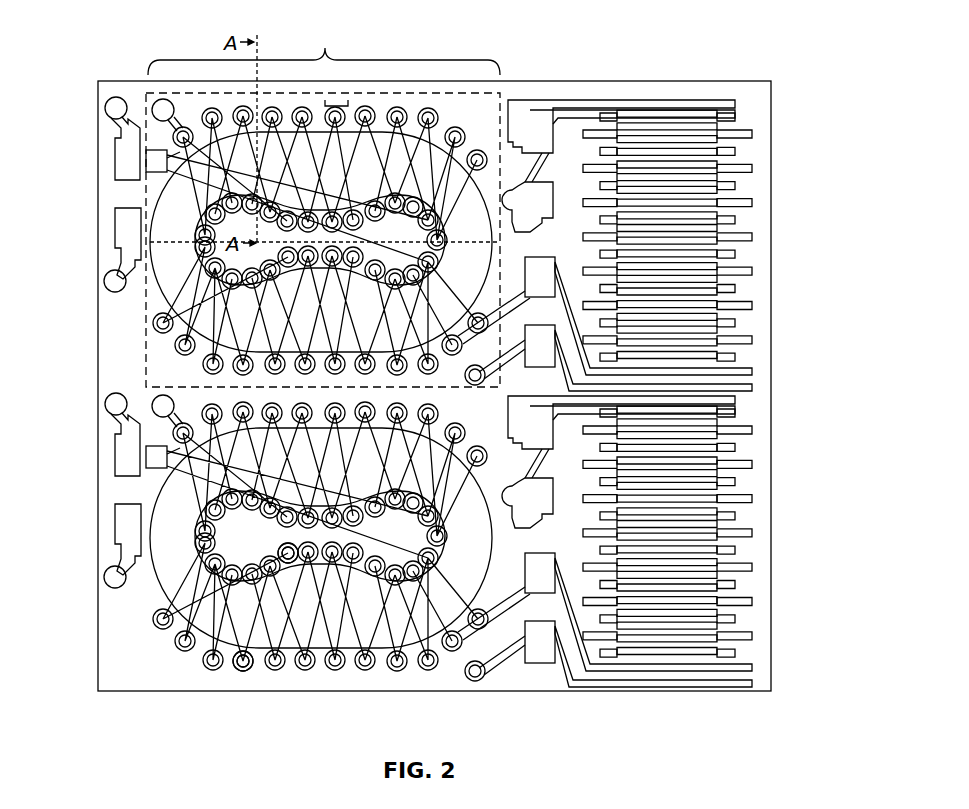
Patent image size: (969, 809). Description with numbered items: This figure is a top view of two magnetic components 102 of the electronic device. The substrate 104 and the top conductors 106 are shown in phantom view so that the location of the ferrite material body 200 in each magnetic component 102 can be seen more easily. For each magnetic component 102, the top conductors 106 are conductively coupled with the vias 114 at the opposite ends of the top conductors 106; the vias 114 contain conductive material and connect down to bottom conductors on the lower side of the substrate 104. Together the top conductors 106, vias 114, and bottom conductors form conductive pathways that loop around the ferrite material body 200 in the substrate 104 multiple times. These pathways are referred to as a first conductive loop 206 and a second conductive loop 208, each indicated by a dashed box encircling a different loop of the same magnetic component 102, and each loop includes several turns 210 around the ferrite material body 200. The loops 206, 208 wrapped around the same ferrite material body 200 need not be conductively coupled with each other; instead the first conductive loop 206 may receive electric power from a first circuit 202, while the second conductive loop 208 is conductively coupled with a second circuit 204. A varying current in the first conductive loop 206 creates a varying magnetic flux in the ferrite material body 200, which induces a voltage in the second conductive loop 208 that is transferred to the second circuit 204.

The magnetic component 102 is at (325, 47).
The substrate 104 is at (771, 86).
The top conductors 106 is at (182, 583).
The vias 114 is at (290, 552).
The ferrite material body 200 is at (153, 300).
The first circuit 202 is at (120, 156).
The second circuit 204 is at (667, 101).
The first conductive loop 206 is at (502, 94).
The second conductive loop 208 is at (148, 364).
The turns 210 is at (337, 100).